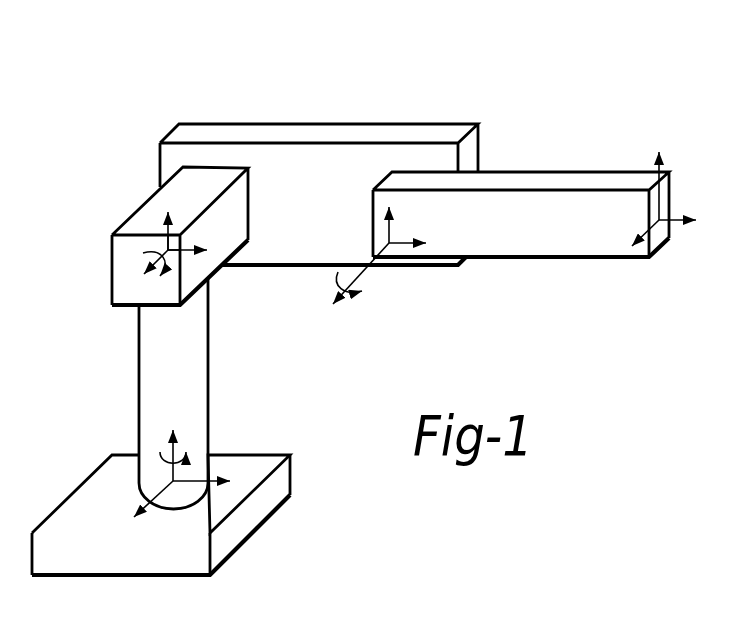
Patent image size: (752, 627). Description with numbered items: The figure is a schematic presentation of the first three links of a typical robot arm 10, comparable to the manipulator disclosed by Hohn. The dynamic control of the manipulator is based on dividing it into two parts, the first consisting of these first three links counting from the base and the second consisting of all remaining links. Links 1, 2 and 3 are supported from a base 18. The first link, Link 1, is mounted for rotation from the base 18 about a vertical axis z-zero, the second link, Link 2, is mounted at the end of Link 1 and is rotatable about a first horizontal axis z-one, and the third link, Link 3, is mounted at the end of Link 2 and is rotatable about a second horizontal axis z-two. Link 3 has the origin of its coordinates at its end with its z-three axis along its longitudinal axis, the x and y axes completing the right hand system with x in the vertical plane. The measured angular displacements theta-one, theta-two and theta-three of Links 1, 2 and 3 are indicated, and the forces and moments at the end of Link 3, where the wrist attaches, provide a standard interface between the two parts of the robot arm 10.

The robot arm 10 is at (318, 98).
The first link 1 is at (136, 373).
The second link 2 is at (256, 125).
The third link 3 is at (577, 172).
The base 18 is at (249, 455).